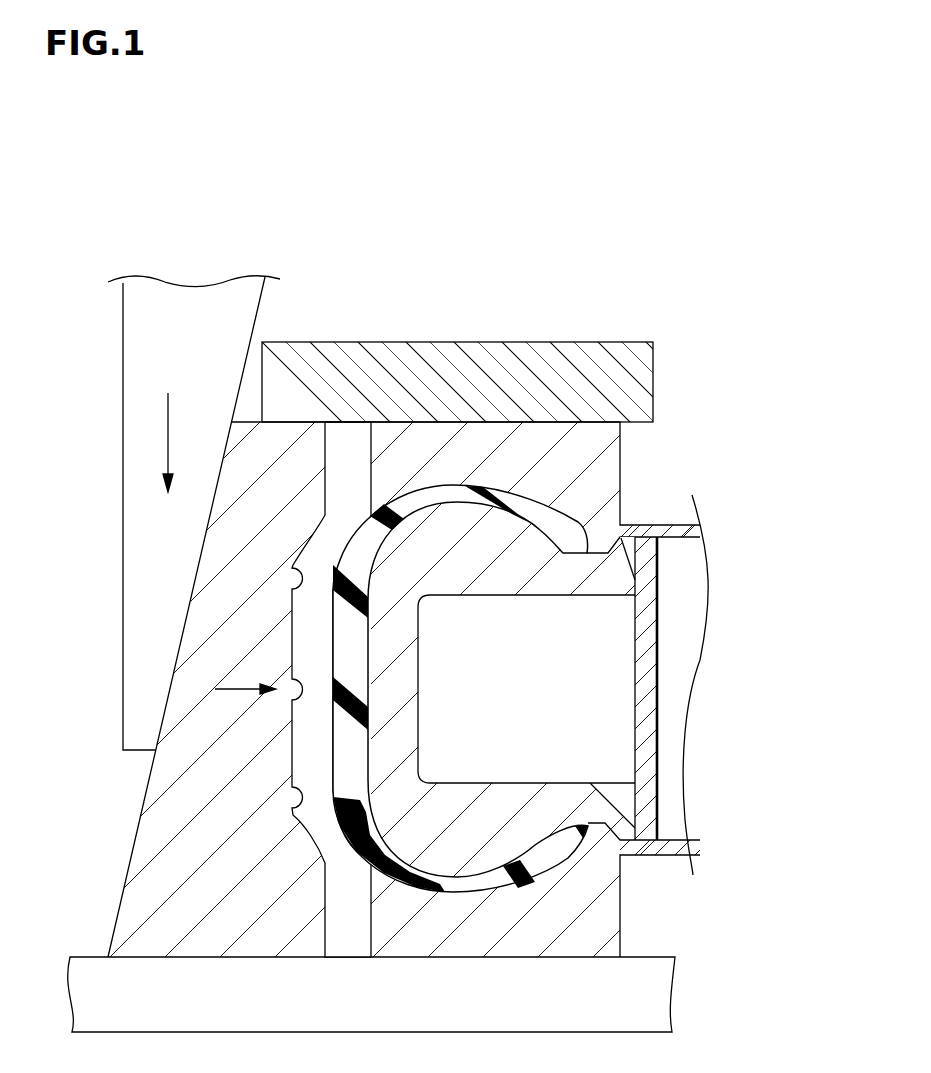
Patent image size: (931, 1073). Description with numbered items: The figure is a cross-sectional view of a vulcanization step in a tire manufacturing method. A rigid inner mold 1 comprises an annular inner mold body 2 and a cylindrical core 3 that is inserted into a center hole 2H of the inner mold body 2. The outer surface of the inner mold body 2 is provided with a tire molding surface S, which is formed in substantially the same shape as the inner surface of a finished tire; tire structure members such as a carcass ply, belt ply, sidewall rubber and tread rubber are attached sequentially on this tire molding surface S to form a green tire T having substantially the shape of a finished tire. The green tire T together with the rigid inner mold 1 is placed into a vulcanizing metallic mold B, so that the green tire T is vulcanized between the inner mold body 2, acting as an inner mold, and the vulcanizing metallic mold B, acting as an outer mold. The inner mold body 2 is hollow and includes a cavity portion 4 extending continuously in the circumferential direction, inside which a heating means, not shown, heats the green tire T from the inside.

The rigid inner mold 1 is at (465, 700).
The inner mold body 2 is at (398, 669).
The center hole 2H is at (658, 568).
The cylindrical core 3 is at (658, 753).
The cavity portion 4 is at (521, 703).
The vulcanizing metallic mold B is at (527, 452).
The tire molding surface S is at (319, 688).
The green tire T is at (348, 765).